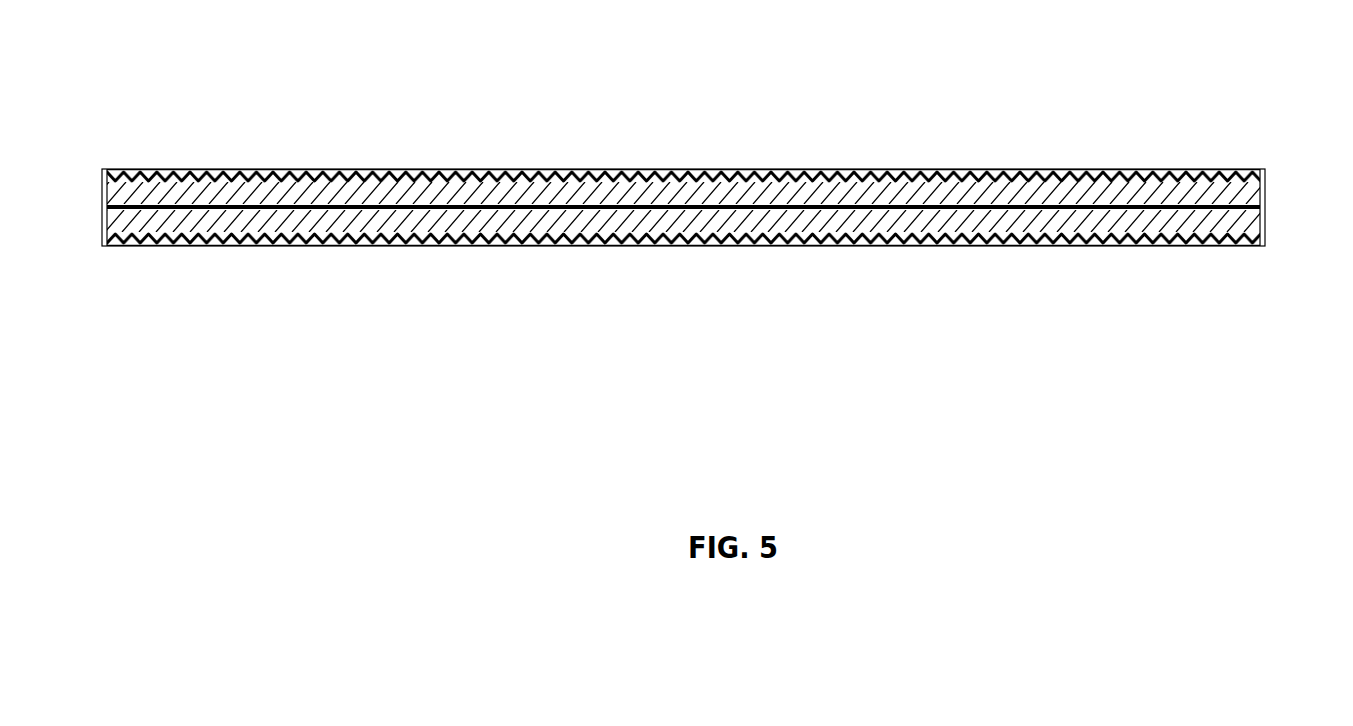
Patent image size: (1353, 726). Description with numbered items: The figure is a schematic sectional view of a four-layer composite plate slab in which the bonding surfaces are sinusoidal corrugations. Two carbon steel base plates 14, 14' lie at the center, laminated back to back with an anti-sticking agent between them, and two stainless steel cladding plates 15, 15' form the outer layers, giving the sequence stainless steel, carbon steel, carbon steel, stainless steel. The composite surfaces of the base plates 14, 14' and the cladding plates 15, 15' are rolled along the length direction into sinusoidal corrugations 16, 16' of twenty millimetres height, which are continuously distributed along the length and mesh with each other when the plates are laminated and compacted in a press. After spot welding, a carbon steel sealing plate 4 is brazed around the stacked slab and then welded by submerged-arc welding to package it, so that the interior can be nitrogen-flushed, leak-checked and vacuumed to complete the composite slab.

The vertical plate 4 is at (122, 173).
The base plate 14 is at (683, 284).
The base plate 14' is at (683, 123).
The cladding plate 15 is at (683, 295).
The cladding plate 15' is at (683, 113).
The sinusoidal corrugation 16 is at (683, 302).
The sinusoidal corrugation 16' is at (683, 106).